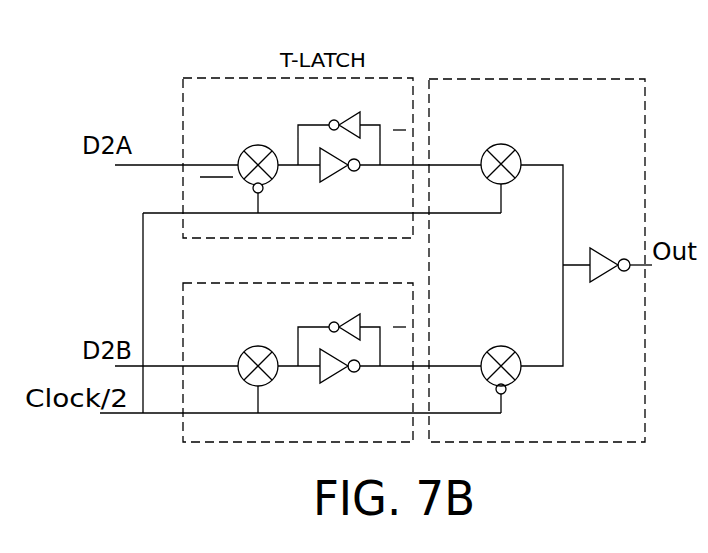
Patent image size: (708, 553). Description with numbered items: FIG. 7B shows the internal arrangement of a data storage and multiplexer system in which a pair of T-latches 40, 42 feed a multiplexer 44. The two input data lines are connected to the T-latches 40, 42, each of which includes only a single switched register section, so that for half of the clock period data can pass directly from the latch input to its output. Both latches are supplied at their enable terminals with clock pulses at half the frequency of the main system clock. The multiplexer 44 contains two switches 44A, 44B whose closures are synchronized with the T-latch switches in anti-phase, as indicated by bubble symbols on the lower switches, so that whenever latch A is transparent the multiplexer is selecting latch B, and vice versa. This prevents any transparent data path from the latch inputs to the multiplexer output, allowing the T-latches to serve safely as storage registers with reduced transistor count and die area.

The T-latch 40 is at (176, 82).
The T-latch 42 is at (182, 281).
The multiplexer 44 is at (621, 135).
The multiplexer switch 44A is at (506, 182).
The multiplexer switch 44B is at (500, 346).